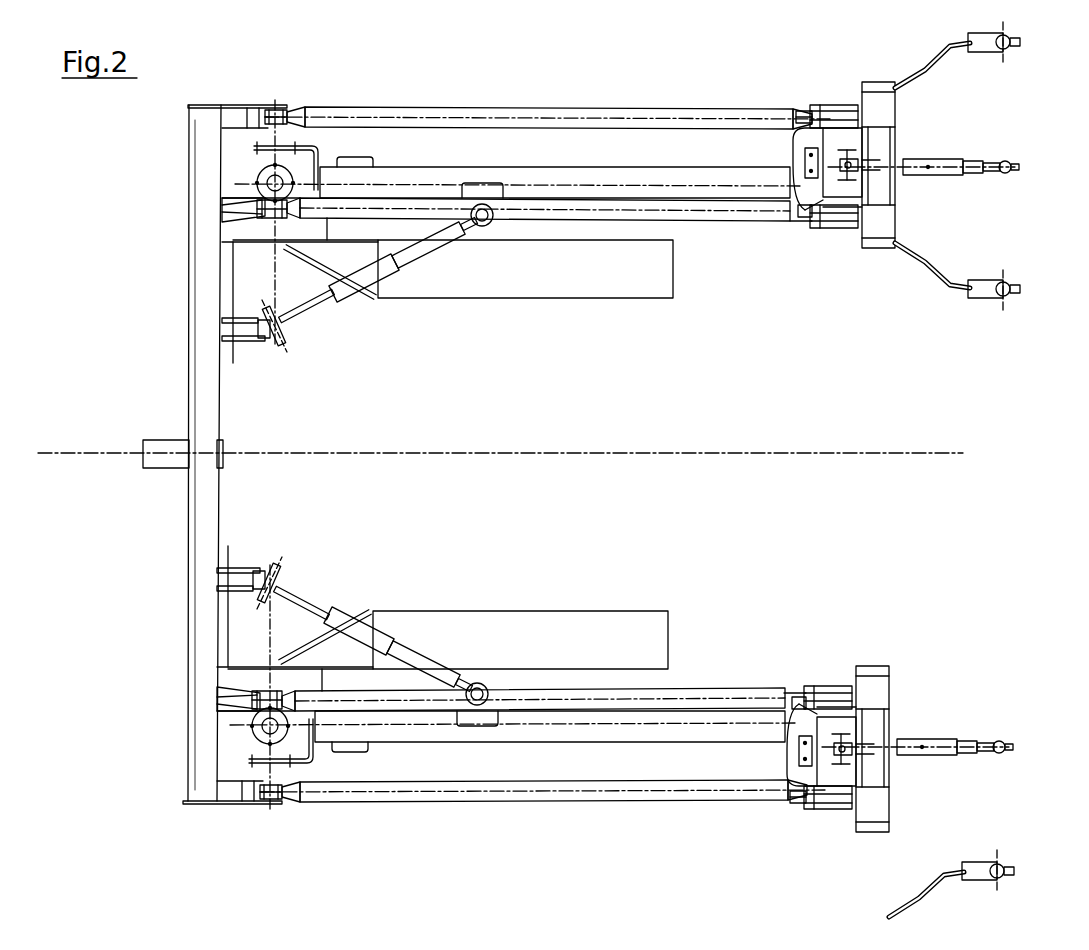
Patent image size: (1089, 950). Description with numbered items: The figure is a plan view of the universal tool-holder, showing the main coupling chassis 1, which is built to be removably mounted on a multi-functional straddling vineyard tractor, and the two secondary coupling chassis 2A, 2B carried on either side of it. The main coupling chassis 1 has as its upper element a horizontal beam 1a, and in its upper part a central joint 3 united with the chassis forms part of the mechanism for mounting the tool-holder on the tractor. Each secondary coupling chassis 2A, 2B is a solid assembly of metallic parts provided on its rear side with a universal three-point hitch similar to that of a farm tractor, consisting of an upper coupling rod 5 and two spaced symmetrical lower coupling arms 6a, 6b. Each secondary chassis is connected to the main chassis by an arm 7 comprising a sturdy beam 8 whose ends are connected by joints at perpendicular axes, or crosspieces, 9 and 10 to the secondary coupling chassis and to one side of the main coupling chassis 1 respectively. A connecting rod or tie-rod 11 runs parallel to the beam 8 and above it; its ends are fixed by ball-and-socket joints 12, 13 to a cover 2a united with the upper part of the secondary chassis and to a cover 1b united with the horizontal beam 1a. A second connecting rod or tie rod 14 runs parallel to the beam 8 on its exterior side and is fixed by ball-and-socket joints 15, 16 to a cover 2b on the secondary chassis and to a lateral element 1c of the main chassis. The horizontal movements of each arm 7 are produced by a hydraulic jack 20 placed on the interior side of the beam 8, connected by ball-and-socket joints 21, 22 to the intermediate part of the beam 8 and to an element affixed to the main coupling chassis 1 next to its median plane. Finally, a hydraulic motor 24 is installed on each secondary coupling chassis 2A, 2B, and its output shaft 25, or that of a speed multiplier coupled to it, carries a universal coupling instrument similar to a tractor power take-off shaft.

The main coupling chassis 1 is at (145, 453).
The horizontal beam 1a is at (196, 405).
The cover 1b is at (258, 198).
The lateral element 1c is at (252, 105).
The secondary coupling chassis 2A is at (893, 316).
The secondary coupling chassis 2B is at (903, 614).
The cover 2a is at (830, 228).
The cover 2b is at (835, 105).
The central joint 3 is at (165, 460).
The coupling rod 5 is at (957, 165).
The coupling arm 6a is at (987, 47).
The coupling arm 6b is at (987, 288).
The arm 7 is at (440, 840).
The beam 8 is at (450, 173).
The joint at perpendicular axes 9 is at (793, 215).
The joint at perpendicular axes 10 is at (262, 178).
The tie-rod 11 is at (580, 205).
The ball-and-socket joint 12 is at (807, 228).
The ball-and-socket joint 13 is at (253, 207).
The tie rod 14 is at (362, 110).
The ball-and-socket joint 15 is at (810, 118).
The ball-and-socket joint 16 is at (280, 107).
The hydraulic jack 20 is at (345, 275).
The ball-and-socket joint 21 is at (480, 225).
The ball-and-socket joint 22 is at (282, 340).
The hydraulic motor 24 is at (857, 140).
The output shaft 25 is at (888, 160).